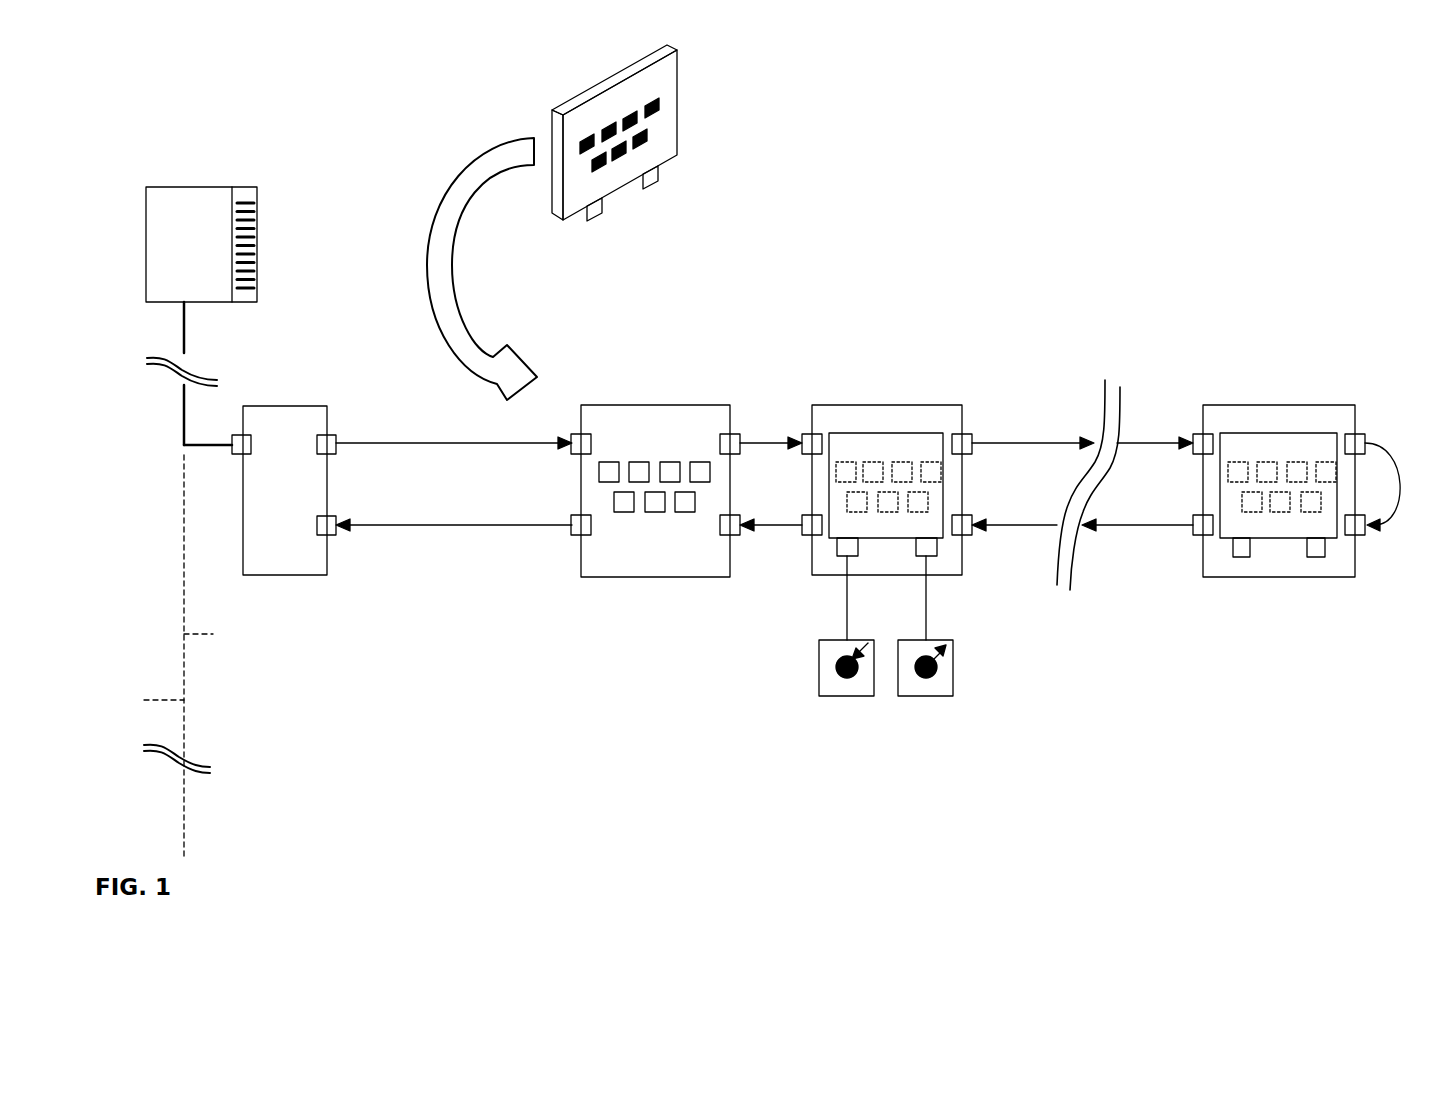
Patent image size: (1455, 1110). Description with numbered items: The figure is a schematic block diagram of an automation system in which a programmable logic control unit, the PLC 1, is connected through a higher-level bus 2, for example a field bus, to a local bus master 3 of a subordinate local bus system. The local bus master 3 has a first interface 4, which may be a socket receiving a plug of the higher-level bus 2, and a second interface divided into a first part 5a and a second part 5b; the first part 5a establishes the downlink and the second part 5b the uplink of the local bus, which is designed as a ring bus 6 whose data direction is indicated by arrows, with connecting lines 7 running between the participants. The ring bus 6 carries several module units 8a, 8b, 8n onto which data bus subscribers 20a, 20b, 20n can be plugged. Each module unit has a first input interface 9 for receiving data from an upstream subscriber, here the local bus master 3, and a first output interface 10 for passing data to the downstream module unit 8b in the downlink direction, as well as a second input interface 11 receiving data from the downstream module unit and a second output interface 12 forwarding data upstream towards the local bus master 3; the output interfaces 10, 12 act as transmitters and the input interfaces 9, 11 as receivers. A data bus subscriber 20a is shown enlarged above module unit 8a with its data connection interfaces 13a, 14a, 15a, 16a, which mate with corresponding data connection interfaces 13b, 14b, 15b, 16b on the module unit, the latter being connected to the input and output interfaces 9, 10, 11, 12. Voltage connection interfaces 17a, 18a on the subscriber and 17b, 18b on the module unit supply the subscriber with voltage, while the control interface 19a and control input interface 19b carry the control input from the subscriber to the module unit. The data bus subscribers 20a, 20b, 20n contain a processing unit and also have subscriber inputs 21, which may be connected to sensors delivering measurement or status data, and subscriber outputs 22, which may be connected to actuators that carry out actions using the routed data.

The PLC 1 is at (201, 244).
The higher-level bus 2 is at (184, 408).
The local bus master 3 is at (285, 490).
The first interface 4 is at (238, 457).
The first part of the second interface 5a is at (328, 437).
The second part of the second interface 5b is at (327, 535).
The ring bus 6 is at (441, 442).
The connecting lines 7 is at (510, 447).
The module unit 8a is at (675, 560).
The module unit 8b is at (953, 558).
The module unit 8n is at (1343, 560).
The first input interface 9 is at (580, 434).
The first output interface 10 is at (733, 434).
The second input interface 11 is at (730, 537).
The second output interface 12 is at (580, 537).
The data connection interface 13a is at (660, 98).
The data connection interface 14a is at (632, 112).
The data connection interface 15a is at (612, 124).
The data connection interface 16a is at (584, 135).
The voltage connection interface 17a is at (650, 132).
The voltage connection interface 18a is at (622, 150).
The control interface 19a is at (597, 167).
The data connection interface 13b is at (608, 462).
The data connection interface 14b is at (638, 462).
The data connection interface 15b is at (668, 462).
The data connection interface 16b is at (700, 462).
The voltage connection interface 17b is at (623, 514).
The voltage connection interface 18b is at (654, 513).
The control input interface 19b is at (685, 514).
The data bus subscriber 20a is at (550, 135).
The data bus subscriber 20b is at (895, 433).
The data bus subscriber 20n is at (1279, 433).
The subscriber inputs 21 is at (653, 187).
The subscriber outputs 22 is at (595, 220).